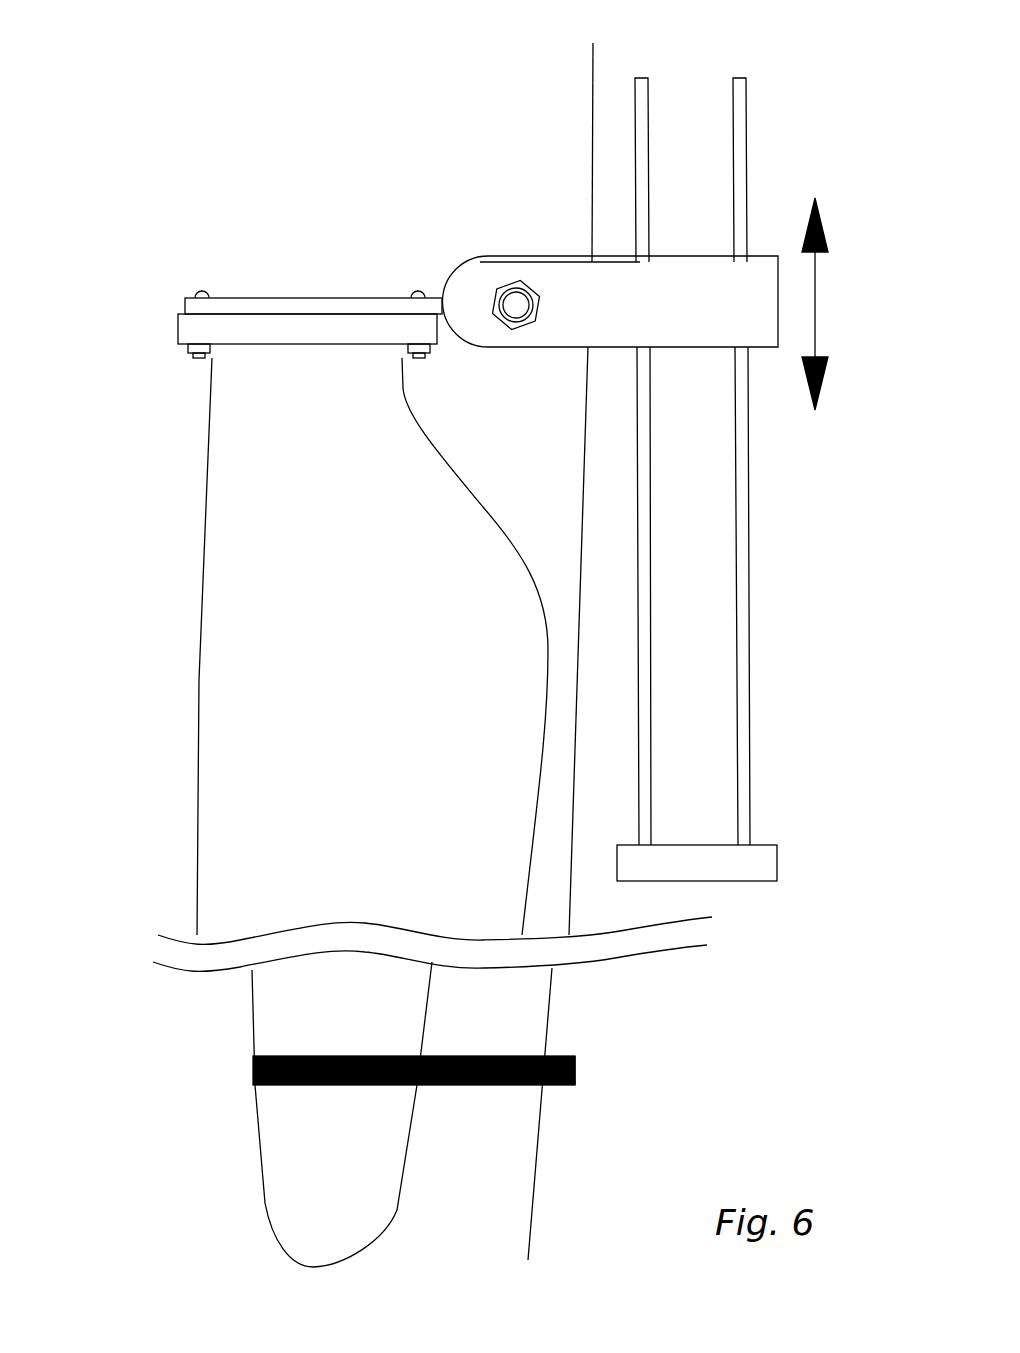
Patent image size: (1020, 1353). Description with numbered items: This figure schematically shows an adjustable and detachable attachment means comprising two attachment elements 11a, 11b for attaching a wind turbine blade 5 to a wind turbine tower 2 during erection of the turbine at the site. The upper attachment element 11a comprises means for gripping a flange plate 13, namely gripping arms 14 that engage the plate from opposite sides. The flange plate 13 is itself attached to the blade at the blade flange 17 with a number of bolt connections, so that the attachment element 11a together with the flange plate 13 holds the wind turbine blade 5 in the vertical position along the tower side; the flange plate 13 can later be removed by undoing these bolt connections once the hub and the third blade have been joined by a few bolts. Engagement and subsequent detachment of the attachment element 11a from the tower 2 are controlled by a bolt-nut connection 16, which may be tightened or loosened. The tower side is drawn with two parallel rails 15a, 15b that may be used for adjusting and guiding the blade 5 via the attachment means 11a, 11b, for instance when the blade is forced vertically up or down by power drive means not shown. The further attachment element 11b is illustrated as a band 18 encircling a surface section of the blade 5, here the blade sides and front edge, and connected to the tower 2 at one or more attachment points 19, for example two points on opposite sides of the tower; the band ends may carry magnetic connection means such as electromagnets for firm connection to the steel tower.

The wind turbine tower 2 is at (600, 510).
The wind turbine blade 5 is at (217, 705).
The attachment element 11a is at (342, 200).
The attachment element 11b is at (650, 1018).
The flange plate 13 is at (185, 299).
The gripping arms 14 is at (493, 268).
The parallel rail 15a is at (633, 108).
The parallel rail 15b is at (733, 80).
The bolt-nut connection 16 is at (533, 287).
The blade flange 17 is at (185, 329).
The band 18 is at (253, 1072).
The attachment point 19 is at (577, 1080).